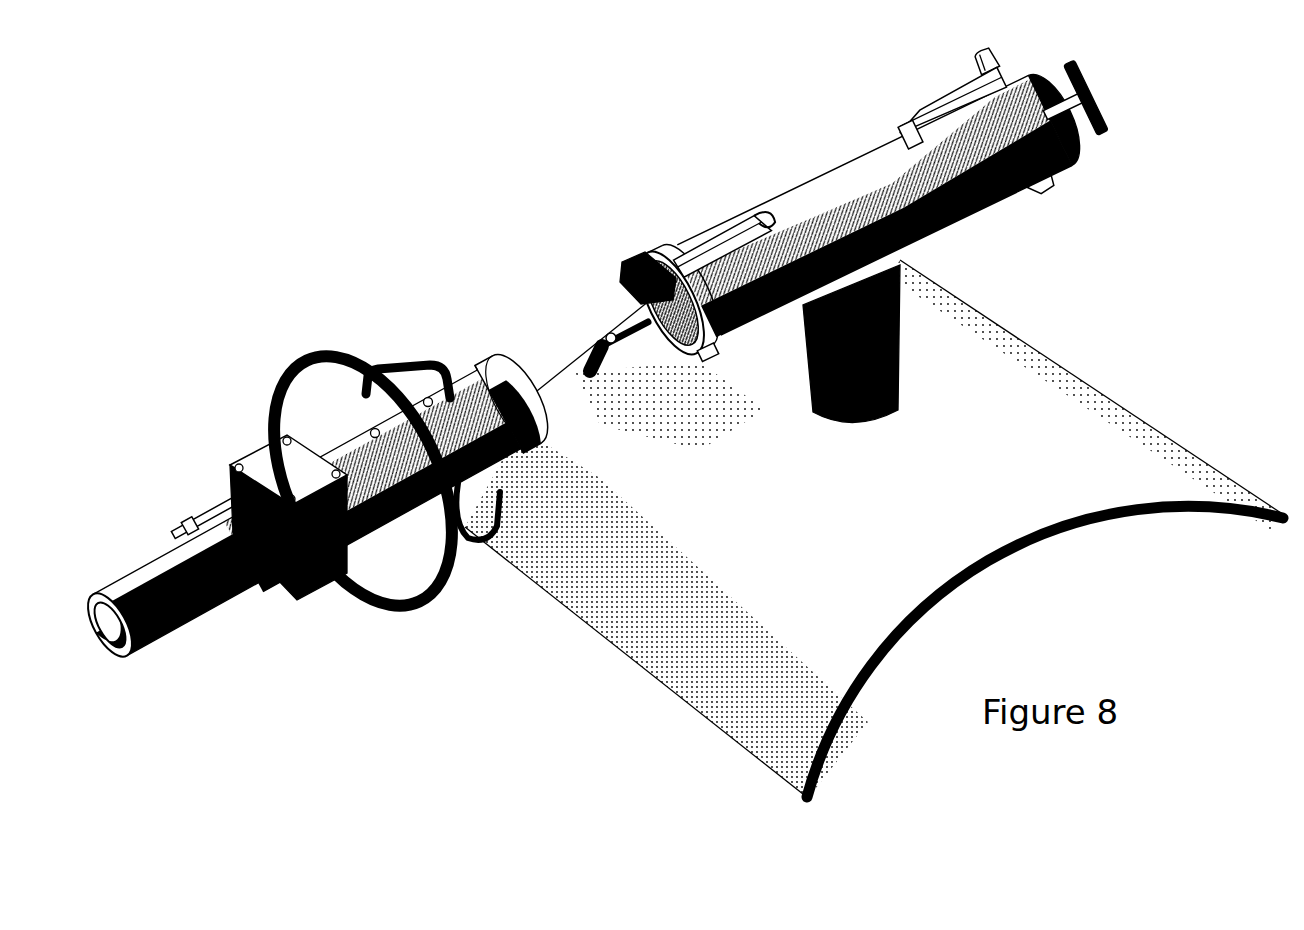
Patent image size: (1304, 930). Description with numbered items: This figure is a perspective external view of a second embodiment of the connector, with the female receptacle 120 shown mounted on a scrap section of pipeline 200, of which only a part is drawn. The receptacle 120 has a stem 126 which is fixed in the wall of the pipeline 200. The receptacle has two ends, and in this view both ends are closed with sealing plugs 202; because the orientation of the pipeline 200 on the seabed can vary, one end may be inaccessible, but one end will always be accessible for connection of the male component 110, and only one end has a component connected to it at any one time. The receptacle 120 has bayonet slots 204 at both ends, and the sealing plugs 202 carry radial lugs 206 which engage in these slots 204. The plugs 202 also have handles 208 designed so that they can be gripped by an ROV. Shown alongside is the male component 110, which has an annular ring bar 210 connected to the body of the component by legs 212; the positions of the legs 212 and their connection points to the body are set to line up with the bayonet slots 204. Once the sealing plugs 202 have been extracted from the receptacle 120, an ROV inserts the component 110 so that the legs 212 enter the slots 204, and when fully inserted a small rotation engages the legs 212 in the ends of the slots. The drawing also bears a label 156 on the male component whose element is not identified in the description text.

The male component 110 is at (224, 428).
The female receptacle 120 is at (843, 145).
The stem 126 is at (898, 328).
The coupling flange 156 is at (510, 390).
The pipeline 200 is at (1098, 392).
The sealing plugs 202 is at (1010, 88).
The bayonet slots 204 is at (722, 239).
The radial lugs 206 is at (909, 138).
The handles 208 is at (597, 340).
The annular ring bar 210 is at (307, 353).
The legs 212 is at (418, 368).